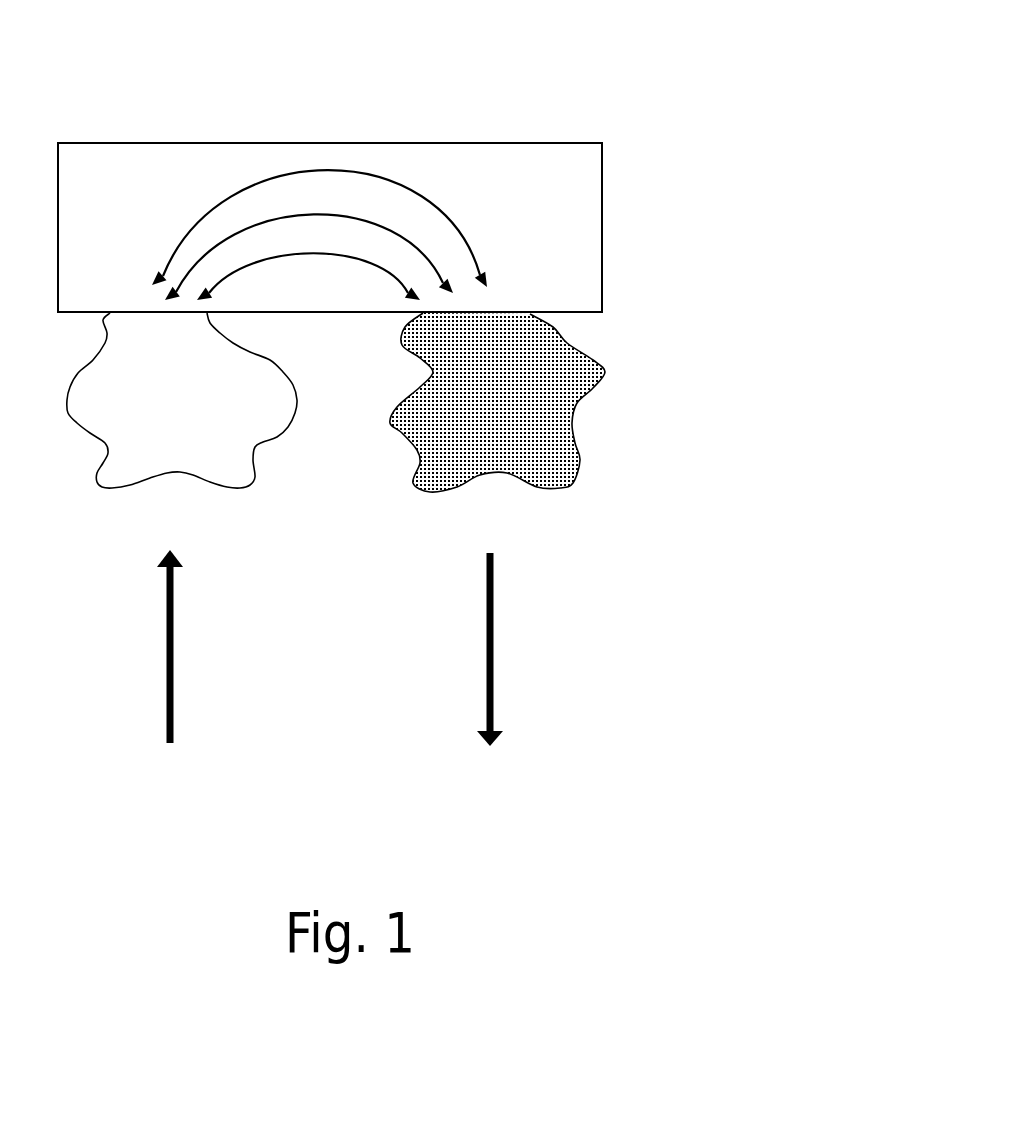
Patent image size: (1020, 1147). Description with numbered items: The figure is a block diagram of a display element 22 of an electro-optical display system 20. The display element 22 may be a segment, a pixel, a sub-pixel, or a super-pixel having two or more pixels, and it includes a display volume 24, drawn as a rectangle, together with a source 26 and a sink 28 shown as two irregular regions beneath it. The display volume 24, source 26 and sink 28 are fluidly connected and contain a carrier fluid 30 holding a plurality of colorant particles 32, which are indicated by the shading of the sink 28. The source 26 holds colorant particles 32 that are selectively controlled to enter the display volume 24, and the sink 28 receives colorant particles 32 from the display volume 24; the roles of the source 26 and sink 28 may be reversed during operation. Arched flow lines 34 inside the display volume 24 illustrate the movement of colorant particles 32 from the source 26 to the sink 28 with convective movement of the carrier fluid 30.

The electro-optical display system 20 is at (852, 84).
The display element 22 is at (784, 124).
The display volume 24 is at (603, 238).
The source 26 is at (232, 488).
The sink 28 is at (572, 487).
The carrier fluid 30 is at (582, 278).
The colorant particles 32 is at (553, 425).
The flow lines 34 is at (440, 187).